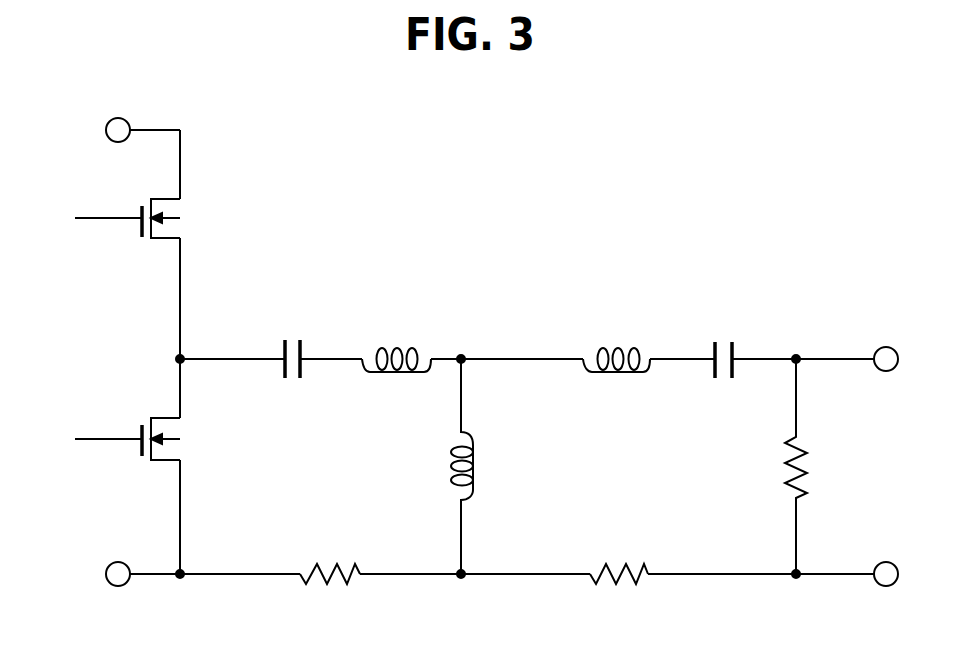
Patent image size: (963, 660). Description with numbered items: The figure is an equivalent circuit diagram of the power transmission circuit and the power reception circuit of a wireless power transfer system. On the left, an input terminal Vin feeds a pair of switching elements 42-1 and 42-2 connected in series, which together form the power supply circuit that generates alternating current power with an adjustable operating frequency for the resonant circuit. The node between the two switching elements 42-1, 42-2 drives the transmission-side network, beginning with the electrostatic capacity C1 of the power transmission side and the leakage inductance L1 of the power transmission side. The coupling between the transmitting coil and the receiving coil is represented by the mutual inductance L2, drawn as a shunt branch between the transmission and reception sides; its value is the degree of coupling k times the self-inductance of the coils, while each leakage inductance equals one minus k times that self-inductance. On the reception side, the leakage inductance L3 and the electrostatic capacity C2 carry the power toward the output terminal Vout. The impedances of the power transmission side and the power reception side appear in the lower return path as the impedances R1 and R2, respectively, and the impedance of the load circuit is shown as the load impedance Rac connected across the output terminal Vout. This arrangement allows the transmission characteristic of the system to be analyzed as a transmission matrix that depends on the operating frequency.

The switching element 42-1 is at (172, 210).
The switching element 42-2 is at (172, 431).
The input voltage terminal Vin is at (139, 115).
The output voltage terminal Vout is at (853, 343).
The electrostatic capacity on the power transmission side C1 is at (306, 374).
The electrostatic capacity on the power reception side C2 is at (736, 376).
The leakage inductance on the power transmission side L1 is at (399, 378).
The mutual inductance L2 is at (445, 466).
The leakage inductance on the power reception side L3 is at (618, 379).
The impedance on the power transmission side R1 is at (331, 590).
The impedance on the power reception side R2 is at (619, 591).
The impedance of the load circuit Rac is at (818, 466).